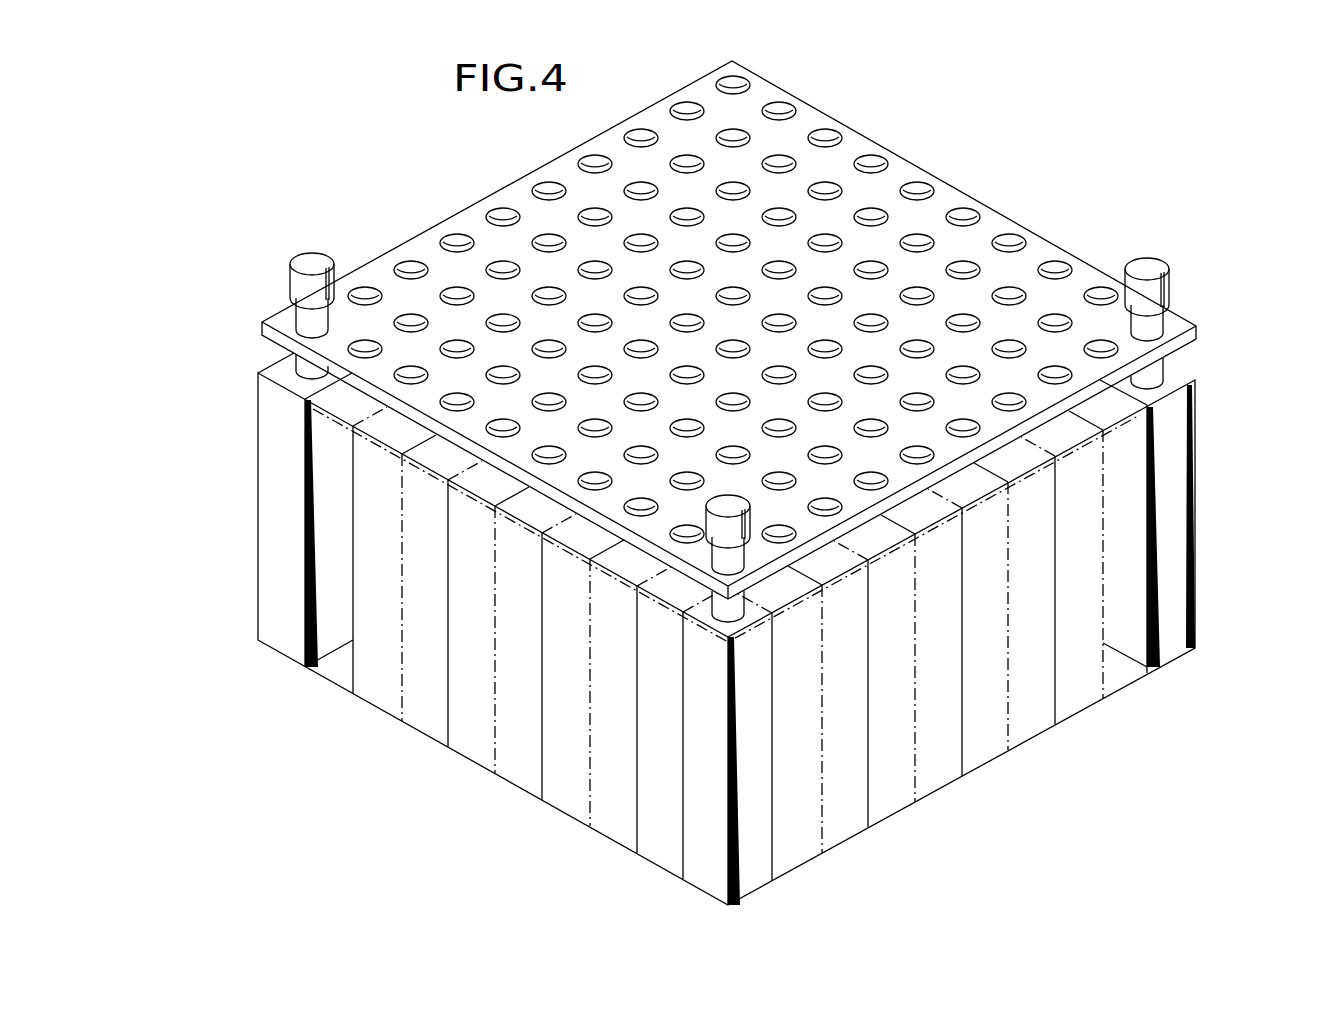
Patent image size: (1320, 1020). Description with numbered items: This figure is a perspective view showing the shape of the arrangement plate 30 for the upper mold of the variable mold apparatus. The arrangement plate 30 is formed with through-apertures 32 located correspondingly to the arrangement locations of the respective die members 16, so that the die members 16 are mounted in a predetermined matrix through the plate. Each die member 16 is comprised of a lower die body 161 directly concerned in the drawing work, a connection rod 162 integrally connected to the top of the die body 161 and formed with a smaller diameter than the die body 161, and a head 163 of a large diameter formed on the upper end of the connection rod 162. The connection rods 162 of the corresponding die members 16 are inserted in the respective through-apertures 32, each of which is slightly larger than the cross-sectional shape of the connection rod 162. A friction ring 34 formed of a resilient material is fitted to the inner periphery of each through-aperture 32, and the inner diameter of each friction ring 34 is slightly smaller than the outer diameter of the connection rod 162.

The arrangement plate 30 is at (729, 330).
The through-aperture 32 is at (872, 156).
The die member 16 is at (722, 631).
The die body 161 is at (1243, 496).
The connection rod 162 is at (1233, 306).
The head 163 is at (1238, 262).
The friction ring 34 is at (275, 349).